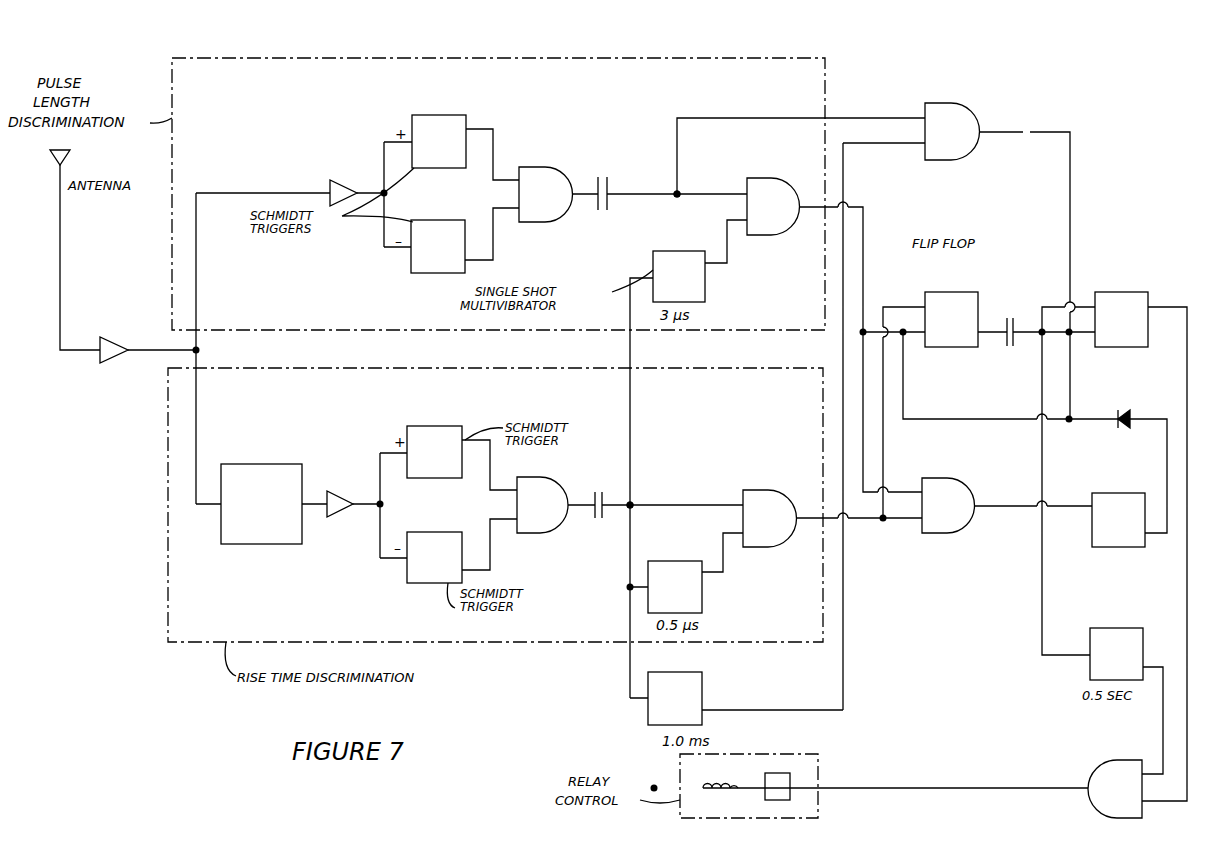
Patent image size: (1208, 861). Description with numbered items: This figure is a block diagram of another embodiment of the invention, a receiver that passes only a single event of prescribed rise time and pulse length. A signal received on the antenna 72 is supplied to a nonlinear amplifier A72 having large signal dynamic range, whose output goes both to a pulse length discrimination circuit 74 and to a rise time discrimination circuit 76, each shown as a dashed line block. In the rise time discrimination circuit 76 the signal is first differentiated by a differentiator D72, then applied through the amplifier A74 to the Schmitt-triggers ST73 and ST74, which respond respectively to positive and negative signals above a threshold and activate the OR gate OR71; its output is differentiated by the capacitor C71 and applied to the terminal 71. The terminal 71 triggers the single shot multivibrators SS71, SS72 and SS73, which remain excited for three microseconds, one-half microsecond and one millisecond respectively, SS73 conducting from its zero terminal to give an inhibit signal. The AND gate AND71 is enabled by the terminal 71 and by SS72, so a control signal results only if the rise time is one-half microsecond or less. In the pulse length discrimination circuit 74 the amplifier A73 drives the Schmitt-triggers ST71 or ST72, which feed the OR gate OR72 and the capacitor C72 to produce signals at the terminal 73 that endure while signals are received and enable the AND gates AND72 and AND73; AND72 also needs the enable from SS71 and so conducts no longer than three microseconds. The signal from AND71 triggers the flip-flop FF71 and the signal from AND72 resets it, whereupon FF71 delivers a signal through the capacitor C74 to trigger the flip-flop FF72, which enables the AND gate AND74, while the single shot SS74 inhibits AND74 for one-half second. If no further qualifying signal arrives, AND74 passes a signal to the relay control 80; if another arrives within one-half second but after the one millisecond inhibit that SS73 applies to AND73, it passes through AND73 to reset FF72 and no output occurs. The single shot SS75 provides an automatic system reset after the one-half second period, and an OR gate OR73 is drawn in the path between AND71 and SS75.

The terminal 71 is at (634, 503).
The antenna 72 is at (68, 156).
The terminal 73 is at (679, 192).
The pulse length discrimination circuit 74 is at (322, 58).
The rise time discrimination circuit 76 is at (168, 532).
The relay control 80 is at (810, 754).
The nonlinear amplifier A72 is at (108, 340).
The amplifier A73 is at (335, 184).
The amplifier A74 is at (330, 490).
The Schmitt-trigger ST71 is at (436, 115).
The Schmitt-trigger ST72 is at (414, 220).
The Schmitt-trigger ST73 is at (425, 426).
The Schmitt-trigger ST74 is at (418, 532).
The OR gate OR71 is at (542, 505).
The OR gate OR72 is at (546, 194).
The OR gate OR73 is at (948, 505).
The AND gate AND71 is at (770, 518).
The AND gate AND72 is at (773, 206).
The AND gate AND73 is at (952, 131).
The AND gate AND74 is at (1115, 789).
The capacitor C71 is at (612, 481).
The capacitor C72 is at (600, 177).
The capacitor C74 is at (1007, 352).
The single shot multivibrator SS71 is at (666, 251).
The single shot multivibrator SS72 is at (698, 561).
The single shot multivibrator SS73 is at (660, 672).
The single shot device SS74 is at (1092, 628).
The single shot multivibrator SS75 is at (1095, 493).
The flip-flop FF71 is at (942, 292).
The flip-flop FF72 is at (1108, 292).
The differentiator D72 is at (245, 464).